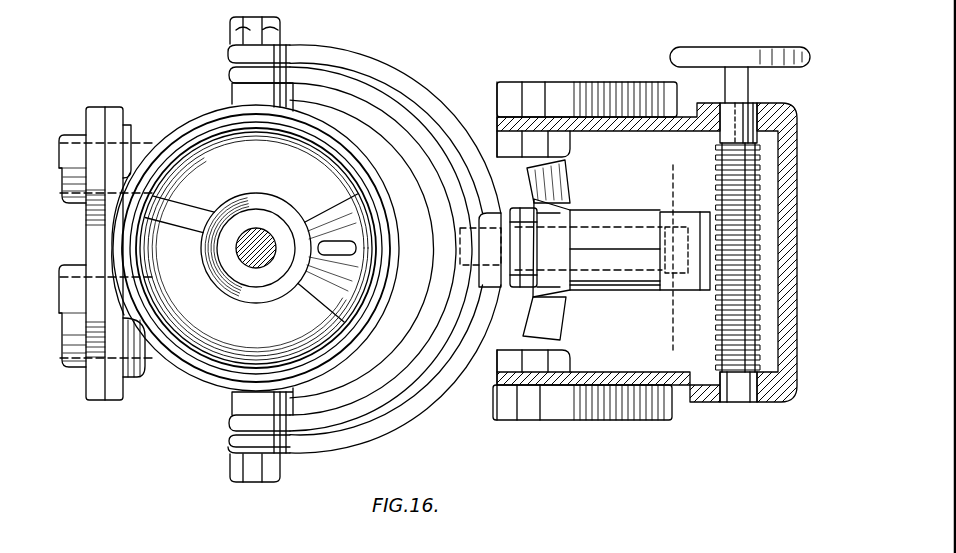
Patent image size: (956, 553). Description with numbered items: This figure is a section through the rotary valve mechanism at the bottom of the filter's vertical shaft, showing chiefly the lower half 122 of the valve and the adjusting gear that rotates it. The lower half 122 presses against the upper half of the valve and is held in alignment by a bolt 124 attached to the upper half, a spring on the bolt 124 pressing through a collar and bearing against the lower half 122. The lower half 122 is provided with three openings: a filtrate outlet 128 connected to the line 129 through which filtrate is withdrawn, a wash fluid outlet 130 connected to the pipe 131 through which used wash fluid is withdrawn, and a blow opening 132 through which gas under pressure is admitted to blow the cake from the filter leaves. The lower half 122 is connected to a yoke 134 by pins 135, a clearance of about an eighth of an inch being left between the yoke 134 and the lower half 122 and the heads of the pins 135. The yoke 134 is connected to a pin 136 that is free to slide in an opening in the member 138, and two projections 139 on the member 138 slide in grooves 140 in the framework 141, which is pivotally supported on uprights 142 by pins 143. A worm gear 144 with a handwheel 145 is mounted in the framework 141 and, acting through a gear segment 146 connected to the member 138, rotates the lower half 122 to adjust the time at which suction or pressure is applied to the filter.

The lower half of the rotary valve mechanism 122 is at (210, 383).
The bolt 124 is at (250, 250).
The filtrate outlet 128 is at (220, 320).
The line 129 is at (83, 372).
The wash fluid outlet 130 is at (225, 165).
The pipe 131 is at (72, 137).
The blow opening 132 is at (348, 248).
The yoke 134 is at (405, 77).
The pins 135 is at (232, 25).
The pin 136 is at (480, 366).
The member 138 is at (663, 292).
The projections 139 is at (561, 217).
The grooves 140 is at (560, 322).
The framework 141 is at (703, 402).
The uprights 142 is at (606, 414).
The pins 143 is at (533, 410).
The worm gear 144 is at (717, 322).
The handwheel 145 is at (693, 47).
The gear segment 146 is at (704, 208).